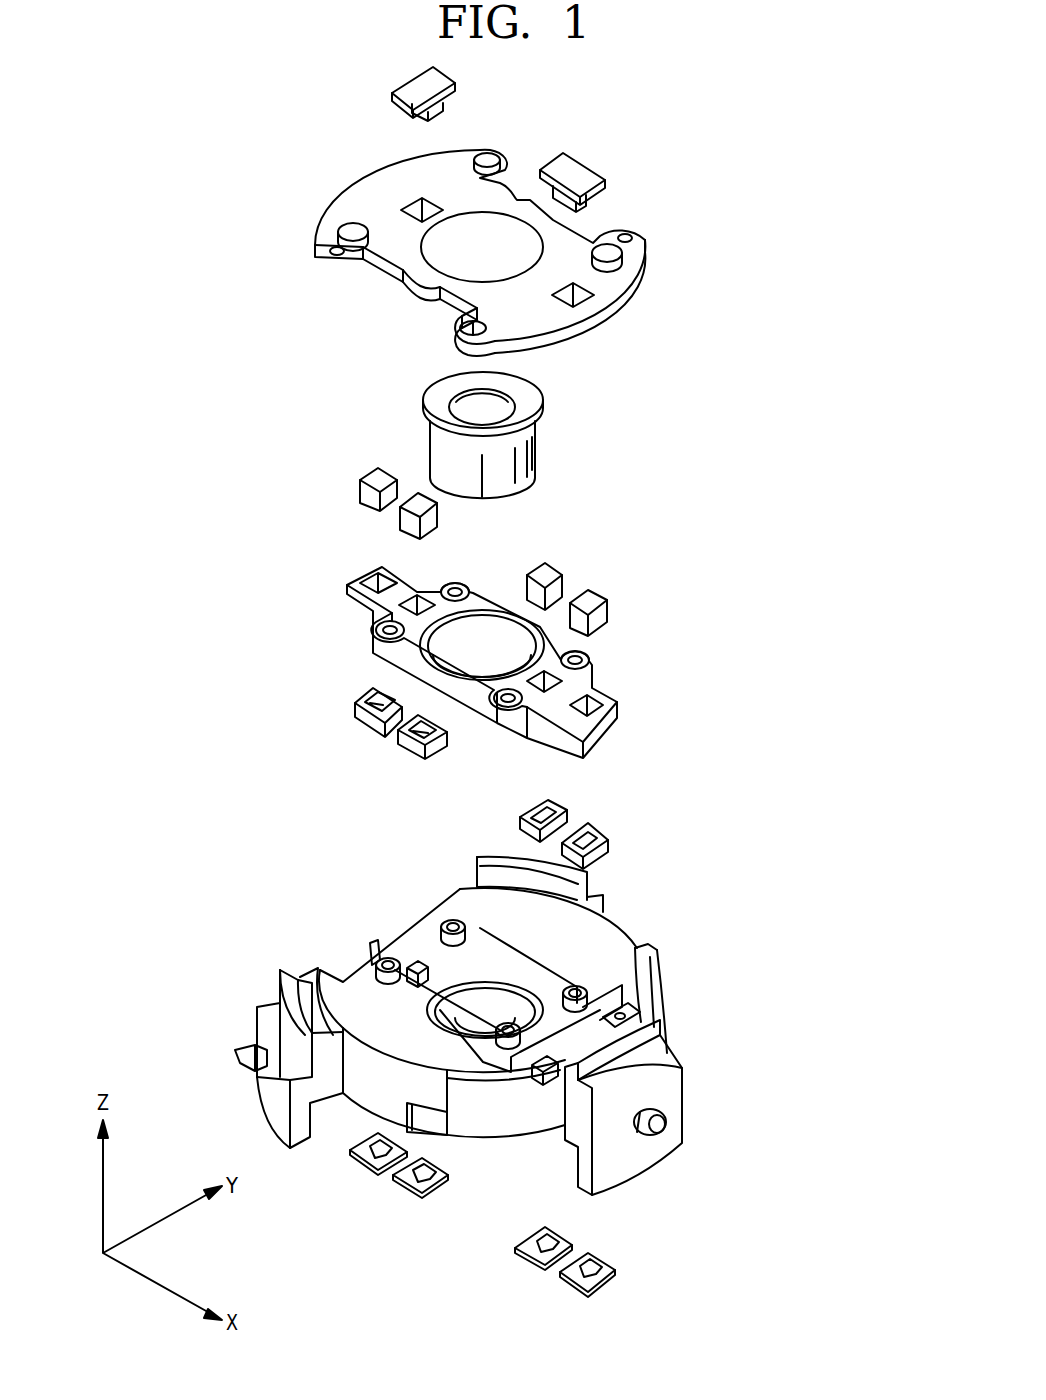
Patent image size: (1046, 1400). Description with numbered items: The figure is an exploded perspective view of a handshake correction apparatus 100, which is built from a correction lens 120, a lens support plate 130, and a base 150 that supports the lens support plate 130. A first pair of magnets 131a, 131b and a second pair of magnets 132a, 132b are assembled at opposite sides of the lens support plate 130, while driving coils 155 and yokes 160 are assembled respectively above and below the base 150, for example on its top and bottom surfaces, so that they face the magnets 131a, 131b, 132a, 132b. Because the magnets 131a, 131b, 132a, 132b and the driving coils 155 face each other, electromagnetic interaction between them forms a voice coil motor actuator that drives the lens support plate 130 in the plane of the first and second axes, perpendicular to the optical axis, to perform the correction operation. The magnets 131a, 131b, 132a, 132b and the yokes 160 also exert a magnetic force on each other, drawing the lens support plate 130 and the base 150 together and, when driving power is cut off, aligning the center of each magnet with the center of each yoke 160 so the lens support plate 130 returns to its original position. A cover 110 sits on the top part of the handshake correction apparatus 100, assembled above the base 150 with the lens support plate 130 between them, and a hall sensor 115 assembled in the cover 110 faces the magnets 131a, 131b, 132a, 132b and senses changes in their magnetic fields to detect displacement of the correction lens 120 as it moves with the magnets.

The handshake correction apparatus 100 is at (697, 150).
The cover 110 is at (628, 268).
The hall sensor 115 is at (578, 168).
The correction lens 120 is at (508, 412).
The lens support plate 130 is at (615, 697).
The magnet 131a is at (405, 518).
The magnet 131b is at (552, 572).
The magnet 132a is at (365, 487).
The magnet 132b is at (598, 597).
The base 150 is at (612, 933).
The driving coil 155 is at (597, 832).
The yoke 160 is at (603, 1262).